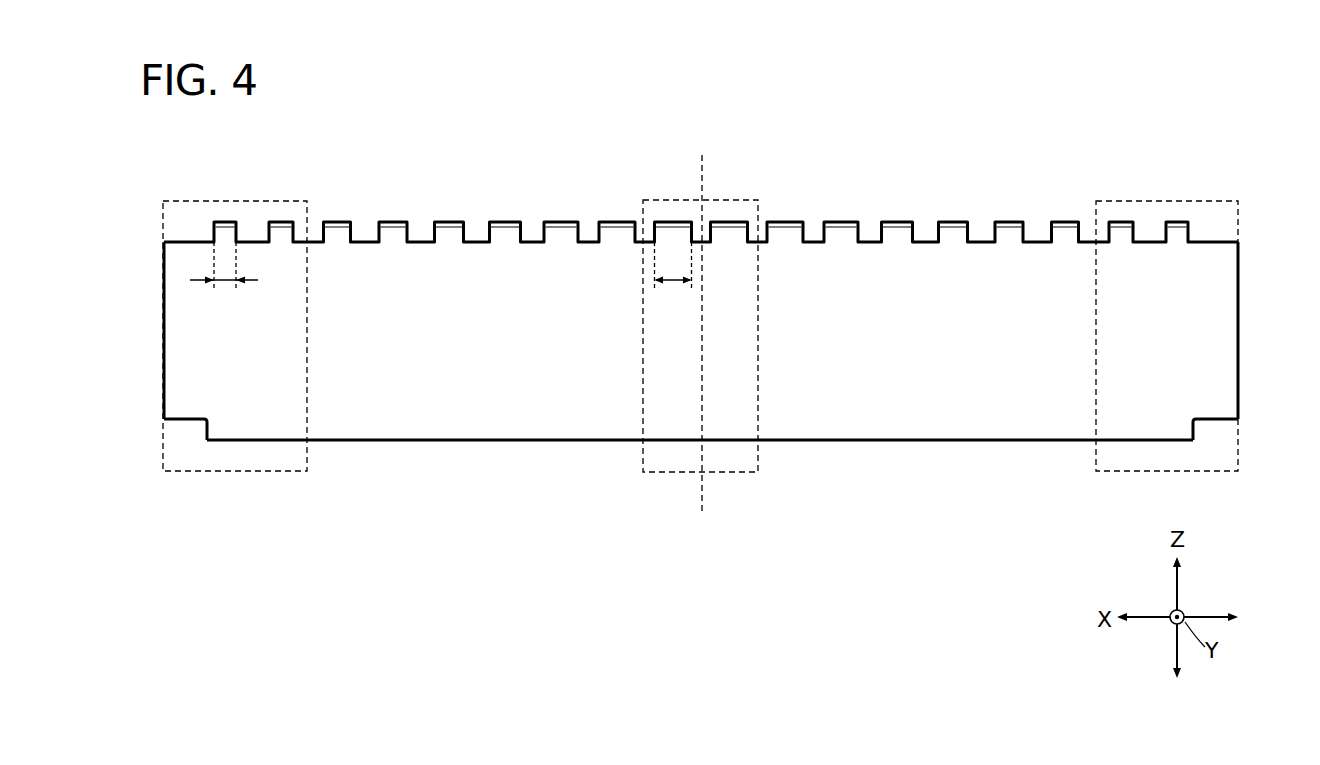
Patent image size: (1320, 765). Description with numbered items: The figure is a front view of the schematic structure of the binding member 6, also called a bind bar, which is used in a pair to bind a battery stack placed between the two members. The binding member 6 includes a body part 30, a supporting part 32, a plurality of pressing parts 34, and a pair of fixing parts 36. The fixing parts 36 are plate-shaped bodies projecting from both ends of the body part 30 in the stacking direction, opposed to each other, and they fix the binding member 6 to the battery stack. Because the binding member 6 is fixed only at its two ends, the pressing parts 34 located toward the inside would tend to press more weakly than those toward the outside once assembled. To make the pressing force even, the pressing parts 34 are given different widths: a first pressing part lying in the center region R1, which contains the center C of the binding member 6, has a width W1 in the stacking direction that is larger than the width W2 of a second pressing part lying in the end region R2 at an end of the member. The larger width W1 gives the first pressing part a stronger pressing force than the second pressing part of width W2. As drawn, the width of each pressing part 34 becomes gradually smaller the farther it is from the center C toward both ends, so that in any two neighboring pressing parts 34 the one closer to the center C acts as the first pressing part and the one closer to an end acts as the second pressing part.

The binding member 6 is at (715, 598).
The body part 30 is at (703, 362).
The supporting part 32 is at (1196, 436).
The pressing part 34 is at (225, 222).
The fixing part 36 is at (164, 273).
The center region R1 is at (742, 200).
The end region R2 is at (283, 201).
The center C is at (702, 165).
The width of first pressing part W1 is at (672, 284).
The width of second pressing part W2 is at (222, 283).